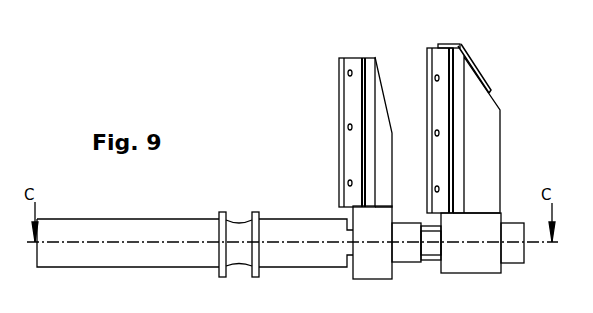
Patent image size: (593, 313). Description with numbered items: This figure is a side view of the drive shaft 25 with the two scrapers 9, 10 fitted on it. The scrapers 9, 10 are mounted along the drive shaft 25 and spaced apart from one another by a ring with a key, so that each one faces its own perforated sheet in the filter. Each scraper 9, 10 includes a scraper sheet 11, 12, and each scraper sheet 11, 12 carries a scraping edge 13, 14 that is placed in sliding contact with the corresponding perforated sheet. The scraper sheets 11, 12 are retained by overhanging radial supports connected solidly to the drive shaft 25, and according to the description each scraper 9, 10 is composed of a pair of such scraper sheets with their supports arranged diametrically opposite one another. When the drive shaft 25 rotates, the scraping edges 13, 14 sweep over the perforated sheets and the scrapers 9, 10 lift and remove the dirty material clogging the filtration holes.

The scraper 9 is at (491, 107).
The scraper 10 is at (386, 130).
The scraper sheet 11 is at (448, 95).
The scraper sheet 12 is at (354, 97).
The scraping edge 13 is at (427, 84).
The scraping edge 14 is at (339, 100).
The drive shaft 25 is at (163, 219).